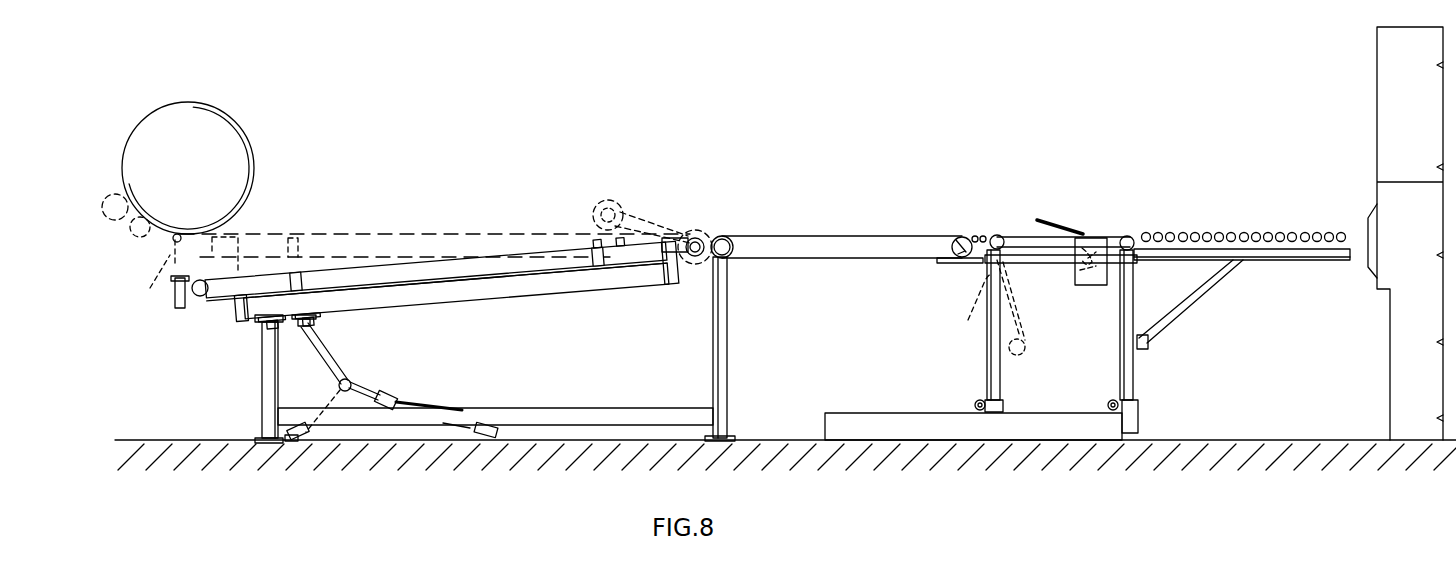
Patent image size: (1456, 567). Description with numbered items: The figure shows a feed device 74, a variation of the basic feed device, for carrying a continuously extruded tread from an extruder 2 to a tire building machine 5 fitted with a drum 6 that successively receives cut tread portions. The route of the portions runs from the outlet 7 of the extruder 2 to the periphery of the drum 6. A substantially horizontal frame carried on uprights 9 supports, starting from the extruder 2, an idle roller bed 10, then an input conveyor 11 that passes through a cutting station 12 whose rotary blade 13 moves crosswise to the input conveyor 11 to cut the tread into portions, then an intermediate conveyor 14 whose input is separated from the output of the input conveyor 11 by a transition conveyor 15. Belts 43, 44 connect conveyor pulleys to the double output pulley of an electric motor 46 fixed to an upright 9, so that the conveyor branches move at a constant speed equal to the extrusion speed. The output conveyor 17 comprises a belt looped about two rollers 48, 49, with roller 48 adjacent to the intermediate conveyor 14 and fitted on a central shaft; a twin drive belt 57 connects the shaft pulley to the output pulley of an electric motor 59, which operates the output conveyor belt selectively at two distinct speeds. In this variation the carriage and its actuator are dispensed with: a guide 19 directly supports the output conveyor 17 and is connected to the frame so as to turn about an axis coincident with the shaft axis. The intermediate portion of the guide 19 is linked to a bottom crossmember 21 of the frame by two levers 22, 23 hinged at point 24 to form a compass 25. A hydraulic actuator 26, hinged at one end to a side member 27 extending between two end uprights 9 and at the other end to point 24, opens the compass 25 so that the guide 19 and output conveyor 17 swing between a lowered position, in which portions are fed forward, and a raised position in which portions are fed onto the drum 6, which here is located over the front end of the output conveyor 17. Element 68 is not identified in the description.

The extruder 2 is at (1388, 64).
The tire building machine 5 is at (162, 114).
The drum 6 is at (238, 178).
The outlet of extruder 7 is at (1372, 212).
The uprights 9 is at (262, 358).
The idle roller bed 10 is at (1237, 230).
The input conveyor 11 is at (1013, 238).
The cutting station 12 is at (1078, 214).
The rotary blade 13 is at (1040, 218).
The intermediate conveyor 14 is at (823, 235).
The transition conveyor 15 is at (972, 234).
The output conveyor 17 is at (456, 255).
The guide 19 is at (496, 300).
The bottom crossmember 21 is at (290, 448).
The lever 22 is at (322, 340).
The lever 23 is at (342, 402).
The hinge point 24 is at (354, 384).
The compass 25 is at (343, 358).
The hydraulic actuator 26 is at (435, 394).
The side member 27 is at (554, 408).
The belt 43 is at (1017, 295).
The belt 44 is at (966, 309).
The electric motor 46 is at (1035, 350).
The roller 48 is at (705, 238).
The roller 49 is at (202, 296).
The twin drive belt 57 is at (660, 218).
The electric motor 59 is at (612, 200).
The bracket 68 is at (174, 290).
The feed device 74 is at (811, 180).